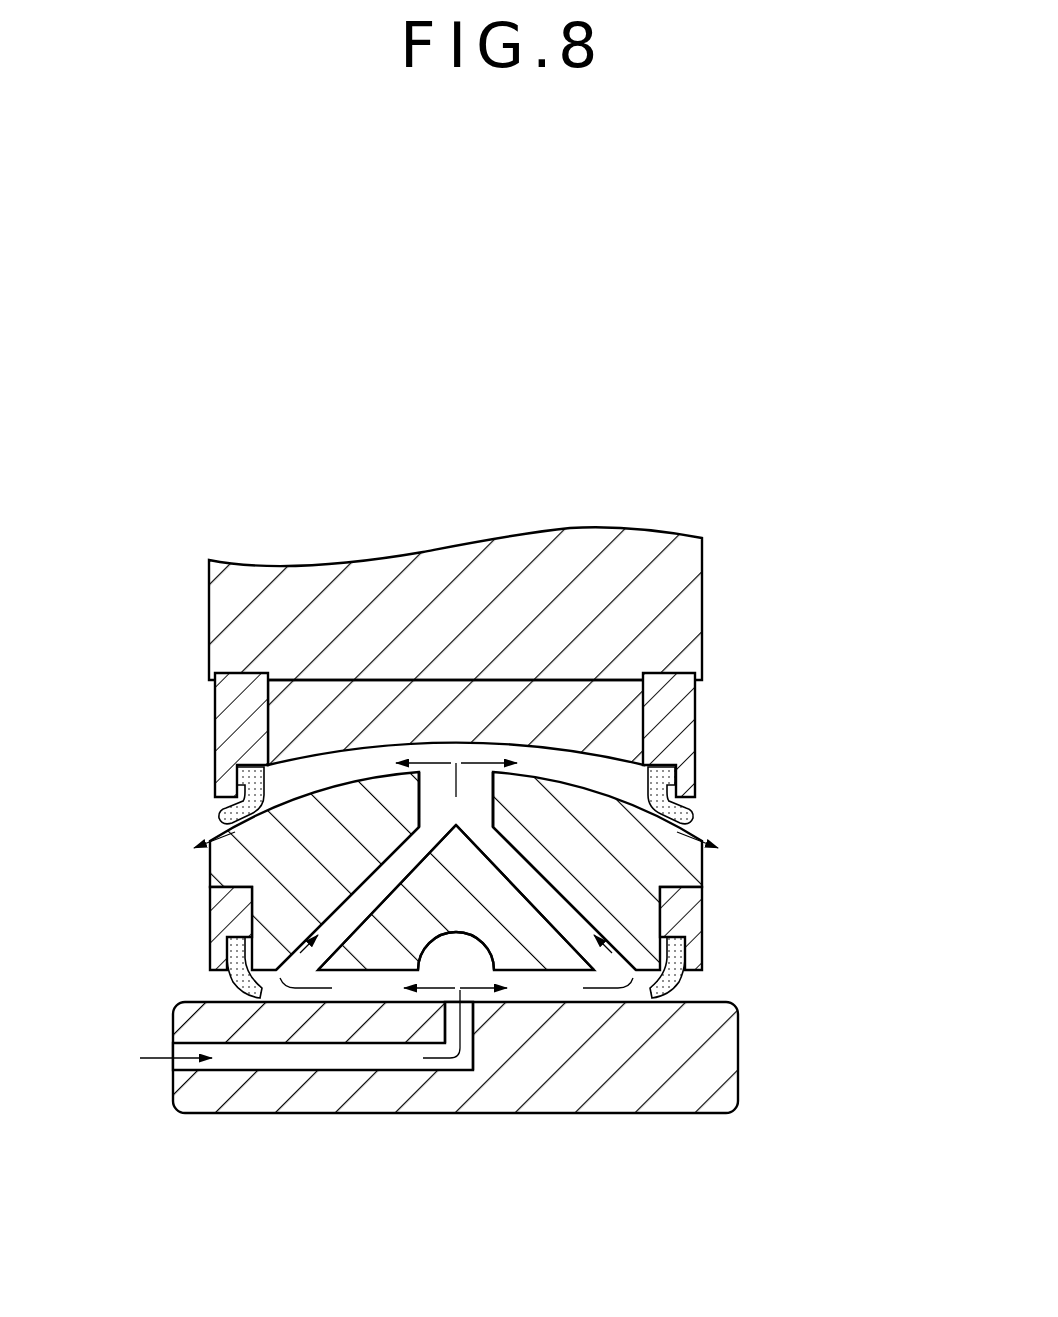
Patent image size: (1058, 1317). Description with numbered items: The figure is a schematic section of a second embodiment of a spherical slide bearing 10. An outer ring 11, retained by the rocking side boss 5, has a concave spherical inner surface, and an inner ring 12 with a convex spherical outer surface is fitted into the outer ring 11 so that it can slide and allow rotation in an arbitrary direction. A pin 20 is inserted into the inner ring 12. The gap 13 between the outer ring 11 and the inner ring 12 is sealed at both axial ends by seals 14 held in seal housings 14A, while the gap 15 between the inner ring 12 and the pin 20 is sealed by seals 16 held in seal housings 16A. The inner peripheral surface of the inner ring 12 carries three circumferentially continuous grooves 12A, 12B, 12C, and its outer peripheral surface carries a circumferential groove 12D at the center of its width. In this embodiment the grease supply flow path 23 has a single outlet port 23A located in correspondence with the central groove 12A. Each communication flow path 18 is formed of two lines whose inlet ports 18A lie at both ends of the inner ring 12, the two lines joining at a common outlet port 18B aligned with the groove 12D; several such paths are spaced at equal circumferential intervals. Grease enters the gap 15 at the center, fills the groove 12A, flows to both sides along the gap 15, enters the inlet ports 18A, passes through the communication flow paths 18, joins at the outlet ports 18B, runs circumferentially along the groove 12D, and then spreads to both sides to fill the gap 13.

The rocking side boss 5 is at (697, 565).
The spherical slide bearing 10 is at (450, 931).
The outer ring 11 is at (633, 707).
The inner ring 12 is at (693, 873).
The groove 12A is at (457, 934).
The groove 12B is at (298, 965).
The groove 12C is at (603, 962).
The circumferential groove 12D is at (423, 786).
The gap 13 is at (303, 778).
The seal 14 is at (220, 818).
The seal housing 14A is at (217, 712).
The gap 15 is at (274, 982).
The seal 16 is at (232, 983).
The seal housing 16A is at (215, 892).
The communication flow path 18 is at (212, 840).
The inlet port 18A is at (530, 997).
The outlet port 18B is at (496, 790).
The pin 20 is at (439, 1095).
The grease supply flow path 23 is at (222, 1065).
The outlet port 23A is at (468, 1008).